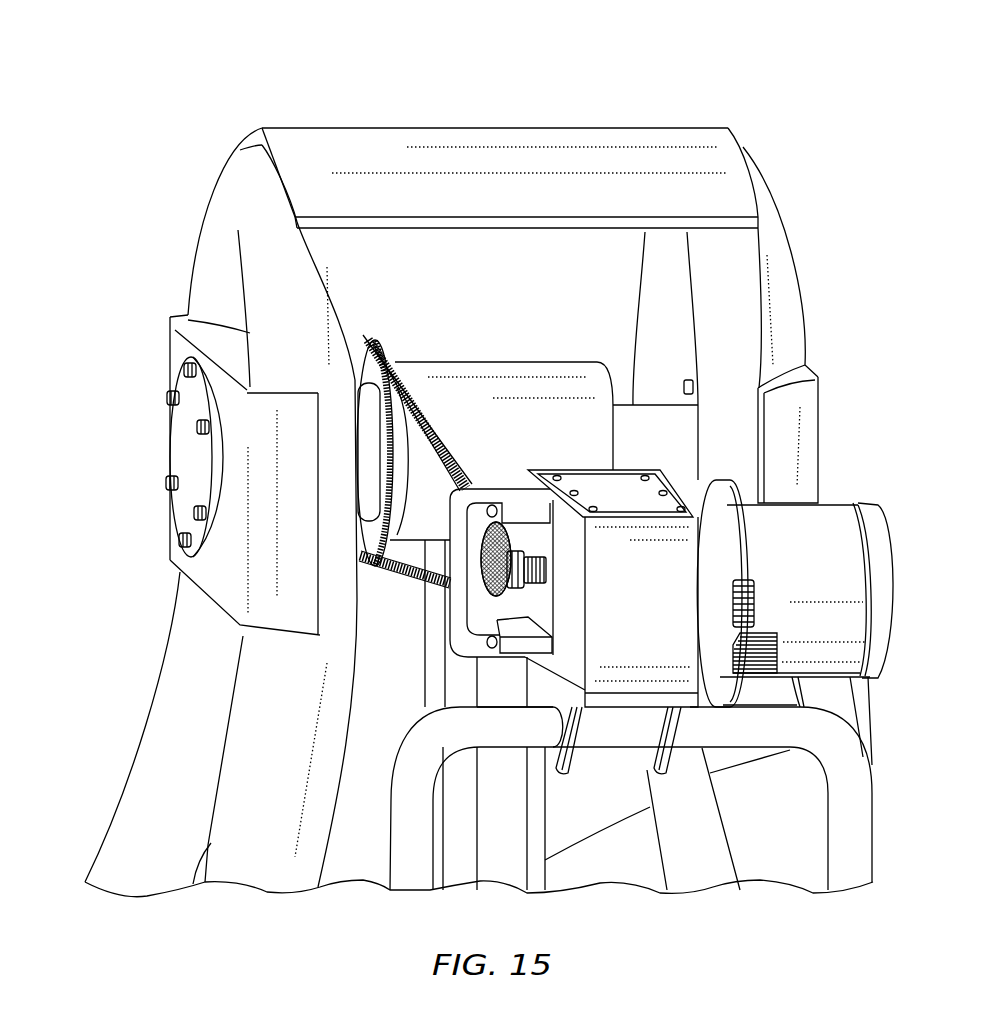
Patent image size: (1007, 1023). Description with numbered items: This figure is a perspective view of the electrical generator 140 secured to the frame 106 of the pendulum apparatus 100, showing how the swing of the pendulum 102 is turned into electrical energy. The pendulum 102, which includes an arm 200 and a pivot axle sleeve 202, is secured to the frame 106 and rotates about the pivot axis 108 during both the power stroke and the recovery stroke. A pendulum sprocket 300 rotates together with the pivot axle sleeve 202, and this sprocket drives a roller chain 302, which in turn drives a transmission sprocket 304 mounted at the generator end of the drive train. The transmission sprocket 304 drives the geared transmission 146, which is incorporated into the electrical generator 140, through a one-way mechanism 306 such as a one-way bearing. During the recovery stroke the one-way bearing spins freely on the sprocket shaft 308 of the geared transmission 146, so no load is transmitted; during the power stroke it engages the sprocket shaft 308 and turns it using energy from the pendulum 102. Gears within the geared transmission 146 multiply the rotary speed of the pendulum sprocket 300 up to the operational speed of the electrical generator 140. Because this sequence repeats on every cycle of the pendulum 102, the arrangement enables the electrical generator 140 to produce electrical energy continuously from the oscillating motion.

The pendulum apparatus 100 is at (783, 86).
The pendulum 102 is at (405, 685).
The frame 106 is at (803, 302).
The pivot axis 108 is at (193, 457).
The electrical generator 140 is at (828, 564).
The geared transmission 146 is at (668, 627).
The arm 200 is at (425, 704).
The pivot axle sleeve 202 is at (568, 360).
The pendulum sprocket 300 is at (367, 360).
The roller chain 302 is at (417, 395).
The transmission sprocket 304 is at (497, 596).
The one-way mechanism 306 is at (516, 558).
The sprocket shaft 308 is at (547, 568).